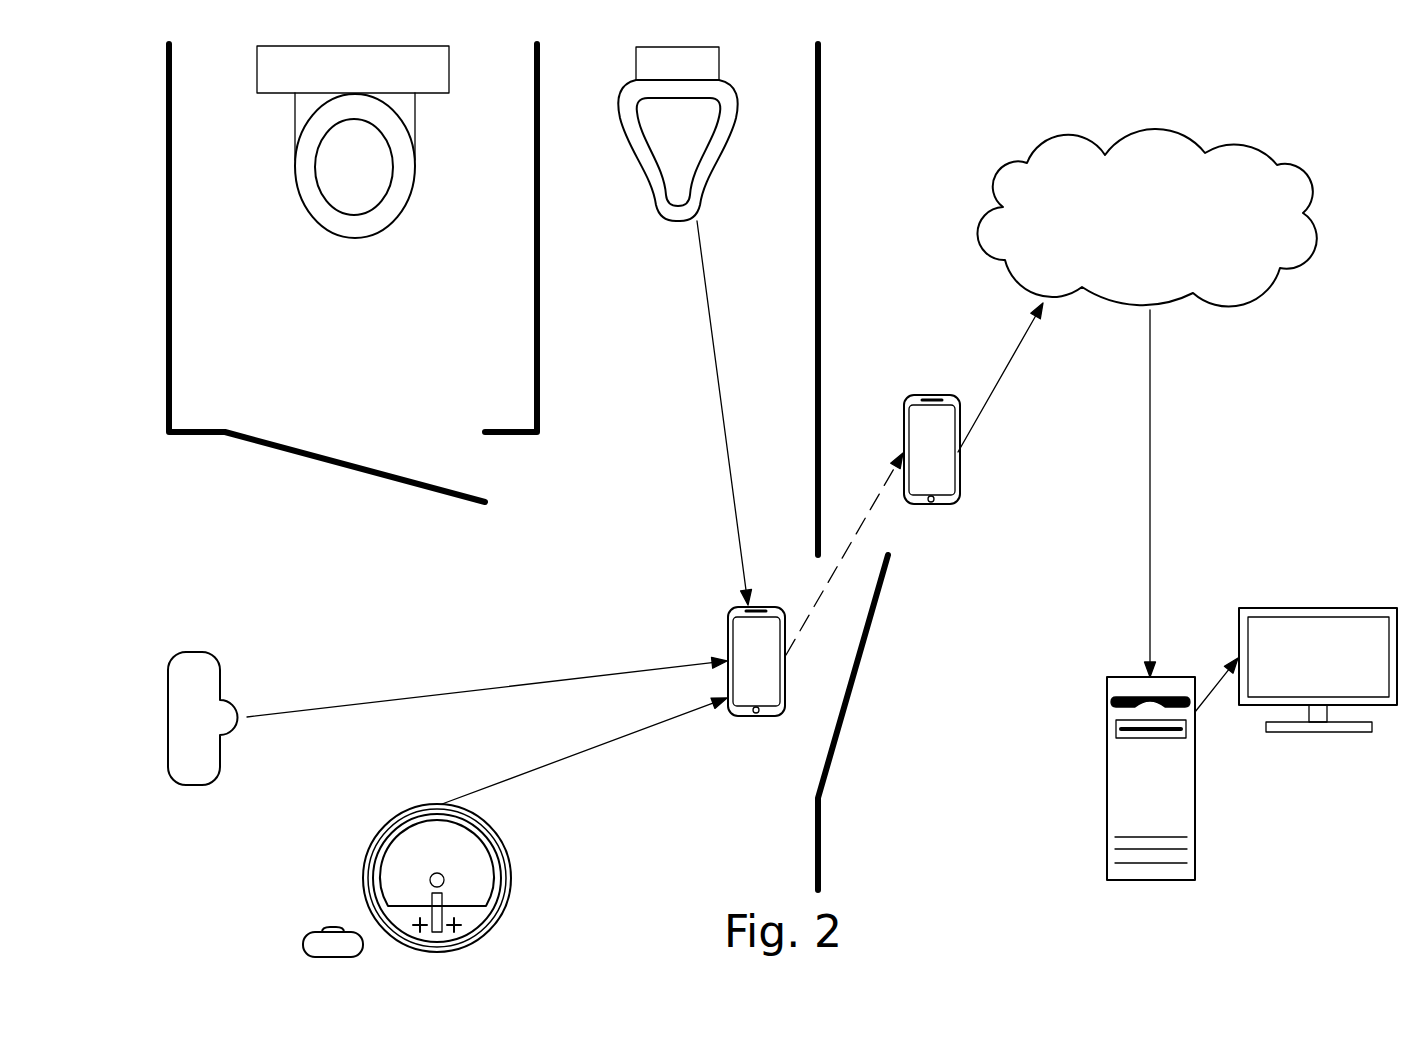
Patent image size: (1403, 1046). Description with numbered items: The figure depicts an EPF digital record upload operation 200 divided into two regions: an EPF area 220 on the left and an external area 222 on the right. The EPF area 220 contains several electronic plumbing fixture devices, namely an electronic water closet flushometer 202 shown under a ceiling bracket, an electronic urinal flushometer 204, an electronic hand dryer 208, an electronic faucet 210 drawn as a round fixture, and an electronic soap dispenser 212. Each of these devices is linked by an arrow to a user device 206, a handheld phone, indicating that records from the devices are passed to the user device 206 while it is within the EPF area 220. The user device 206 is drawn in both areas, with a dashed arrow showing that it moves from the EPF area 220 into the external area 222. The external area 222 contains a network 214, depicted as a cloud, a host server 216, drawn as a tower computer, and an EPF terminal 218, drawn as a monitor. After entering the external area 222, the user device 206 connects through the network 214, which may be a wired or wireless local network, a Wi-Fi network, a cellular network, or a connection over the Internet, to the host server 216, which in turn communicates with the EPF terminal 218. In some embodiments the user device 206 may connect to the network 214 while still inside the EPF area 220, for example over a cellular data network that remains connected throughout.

The EPF digital record upload operation 200 is at (1332, 73).
The electronic water closet flushometer 202 is at (352, 242).
The electronic urinal flushometer 204 is at (674, 222).
The user device 206 is at (762, 716).
The electronic hand dryer 208 is at (193, 652).
The electronic faucet 210 is at (503, 832).
The electronic soap dispenser 212 is at (333, 927).
The network 214 is at (1146, 403).
The host server 216 is at (1150, 881).
The EPF terminal 218 is at (1278, 608).
The EPF area 220 is at (696, 805).
The external area 222 is at (904, 264).